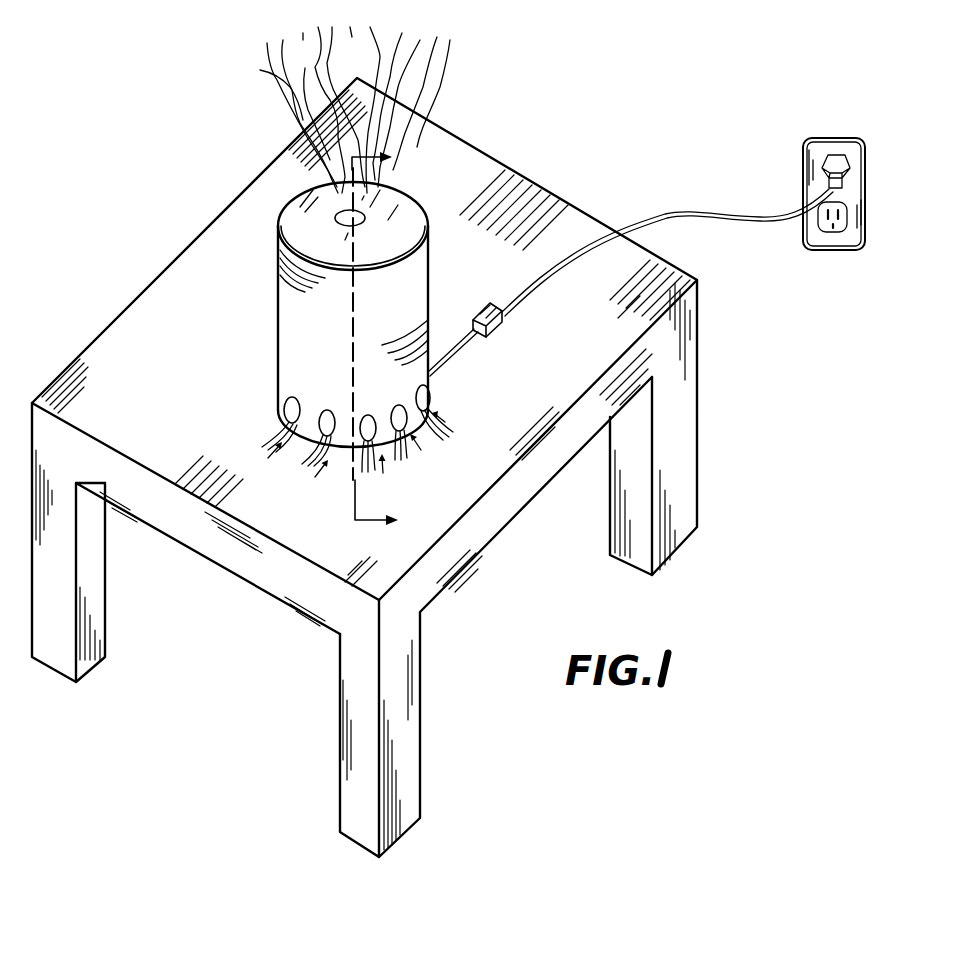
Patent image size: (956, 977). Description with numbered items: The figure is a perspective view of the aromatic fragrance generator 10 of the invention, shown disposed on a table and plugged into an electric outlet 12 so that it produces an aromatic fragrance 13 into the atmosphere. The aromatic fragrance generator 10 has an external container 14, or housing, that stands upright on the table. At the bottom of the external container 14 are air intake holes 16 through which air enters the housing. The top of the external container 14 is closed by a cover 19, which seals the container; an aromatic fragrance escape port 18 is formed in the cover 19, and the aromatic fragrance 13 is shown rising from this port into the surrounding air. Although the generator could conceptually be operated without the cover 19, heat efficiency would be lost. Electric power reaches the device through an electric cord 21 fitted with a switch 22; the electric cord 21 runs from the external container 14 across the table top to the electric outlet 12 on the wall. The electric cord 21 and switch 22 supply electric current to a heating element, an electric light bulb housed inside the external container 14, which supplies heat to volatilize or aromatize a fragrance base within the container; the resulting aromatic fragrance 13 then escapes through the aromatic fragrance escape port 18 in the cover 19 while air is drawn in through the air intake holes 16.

The aromatic fragrance generator 10 is at (456, 280).
The electric outlet 12 is at (823, 150).
The aromatic fragrance 13 is at (411, 92).
The external container 14 is at (294, 340).
The air intake holes 16 is at (283, 424).
The aromatic fragrance escape port 18 is at (282, 213).
The cover 19 is at (280, 256).
The electric cord 21 is at (691, 212).
The switch 22 is at (496, 328).